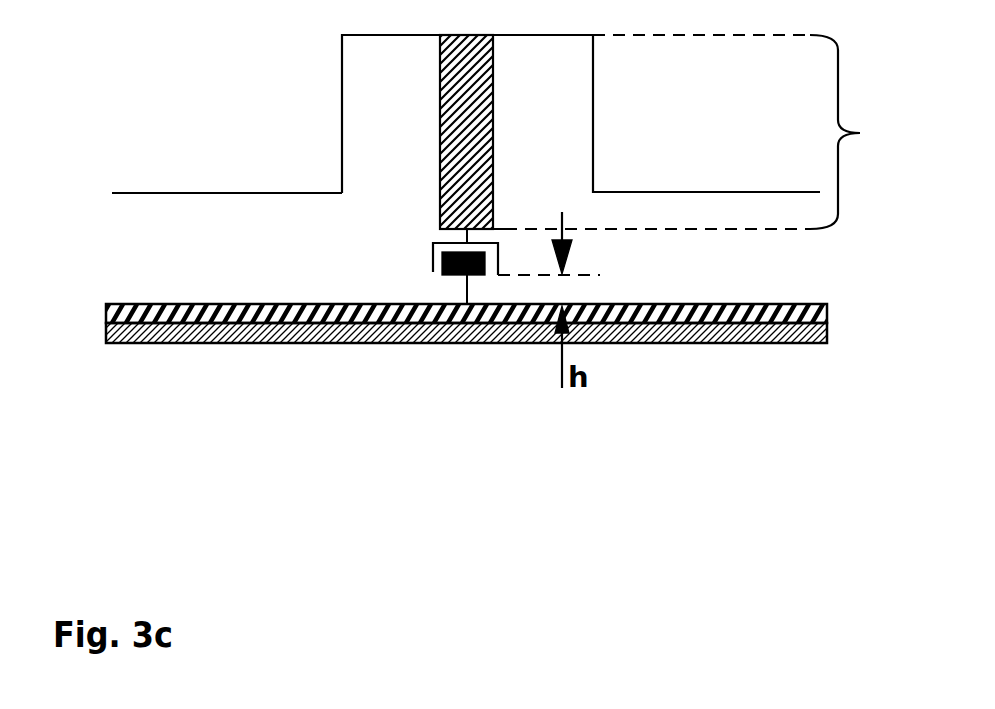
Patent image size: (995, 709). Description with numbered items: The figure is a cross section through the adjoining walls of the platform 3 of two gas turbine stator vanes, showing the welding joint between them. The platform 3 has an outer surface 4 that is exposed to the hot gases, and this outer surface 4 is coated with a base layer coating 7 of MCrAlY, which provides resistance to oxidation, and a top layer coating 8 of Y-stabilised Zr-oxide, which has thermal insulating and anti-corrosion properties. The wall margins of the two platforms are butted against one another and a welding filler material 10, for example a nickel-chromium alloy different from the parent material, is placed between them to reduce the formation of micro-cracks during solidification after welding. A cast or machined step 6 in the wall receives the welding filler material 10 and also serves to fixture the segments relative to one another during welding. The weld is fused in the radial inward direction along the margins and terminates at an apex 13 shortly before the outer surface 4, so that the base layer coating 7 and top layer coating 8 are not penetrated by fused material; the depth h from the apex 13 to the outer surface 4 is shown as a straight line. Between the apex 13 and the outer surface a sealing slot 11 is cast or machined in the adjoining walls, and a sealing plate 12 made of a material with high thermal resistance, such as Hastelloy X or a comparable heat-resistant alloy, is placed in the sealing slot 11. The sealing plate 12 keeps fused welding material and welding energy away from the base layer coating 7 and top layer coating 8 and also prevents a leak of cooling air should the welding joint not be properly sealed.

The platform 3 is at (300, 263).
The outer surface 4 is at (466, 376).
The step 6 is at (614, 132).
The base layer coating 7 is at (162, 310).
The top layer coating 8 is at (233, 332).
The welding filler material 10 is at (472, 105).
The sealing slot 11 is at (441, 262).
The sealing plate 12 is at (478, 270).
The apex 13 is at (440, 226).